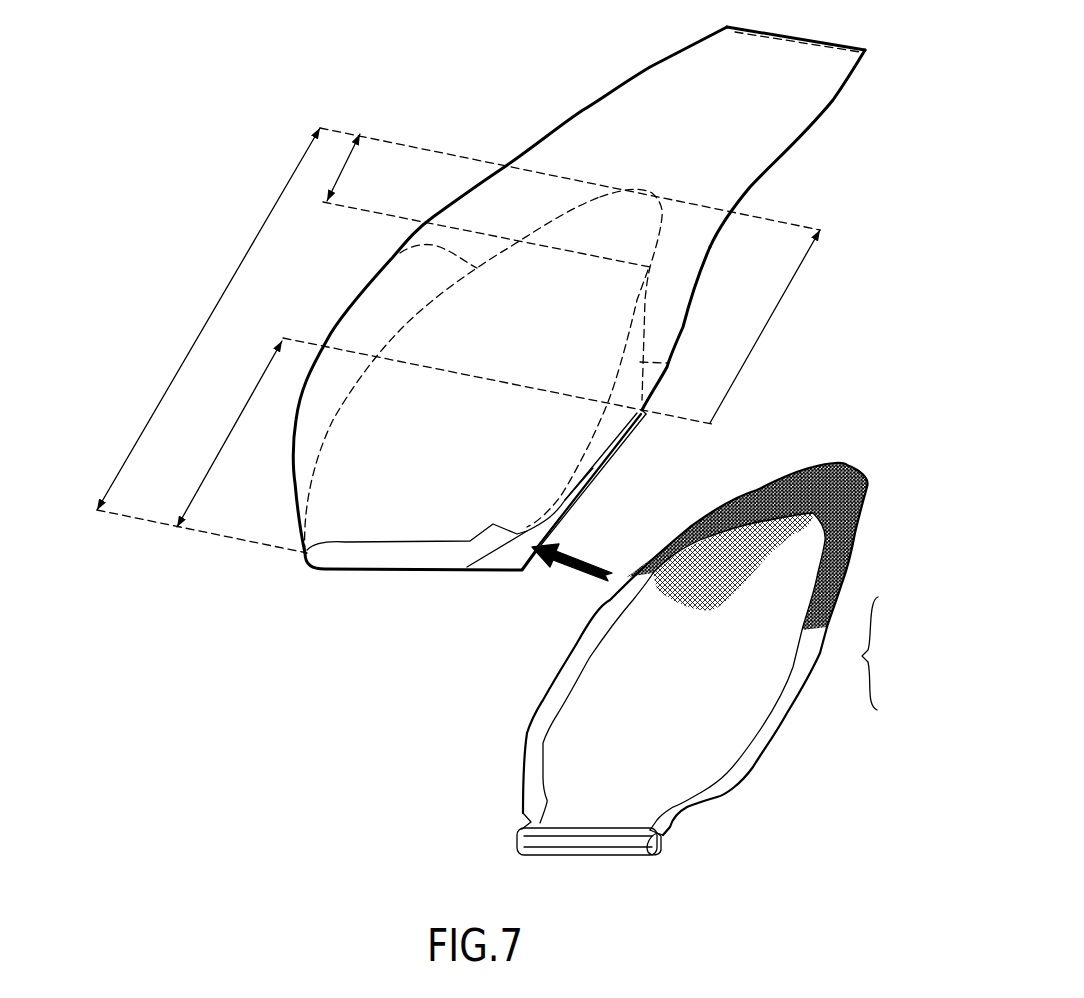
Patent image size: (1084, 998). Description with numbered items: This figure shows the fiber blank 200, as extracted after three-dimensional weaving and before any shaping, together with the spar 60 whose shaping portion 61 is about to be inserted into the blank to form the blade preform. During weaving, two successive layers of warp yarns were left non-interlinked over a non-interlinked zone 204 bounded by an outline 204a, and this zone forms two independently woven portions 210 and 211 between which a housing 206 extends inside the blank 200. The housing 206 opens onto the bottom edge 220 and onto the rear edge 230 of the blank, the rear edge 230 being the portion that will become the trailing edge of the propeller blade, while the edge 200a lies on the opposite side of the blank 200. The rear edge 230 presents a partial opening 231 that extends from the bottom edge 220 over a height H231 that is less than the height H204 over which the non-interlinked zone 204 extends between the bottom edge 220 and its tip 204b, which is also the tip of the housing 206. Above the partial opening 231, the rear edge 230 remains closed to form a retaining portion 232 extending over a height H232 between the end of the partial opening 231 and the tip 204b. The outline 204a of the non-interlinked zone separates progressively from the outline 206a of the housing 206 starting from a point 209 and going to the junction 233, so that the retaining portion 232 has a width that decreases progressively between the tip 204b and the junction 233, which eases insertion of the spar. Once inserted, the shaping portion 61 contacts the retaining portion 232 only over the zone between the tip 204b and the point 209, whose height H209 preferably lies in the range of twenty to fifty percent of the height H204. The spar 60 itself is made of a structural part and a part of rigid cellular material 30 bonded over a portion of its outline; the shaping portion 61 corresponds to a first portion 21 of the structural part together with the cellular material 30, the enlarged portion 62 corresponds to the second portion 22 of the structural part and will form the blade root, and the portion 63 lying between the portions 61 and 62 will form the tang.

The fiber blank 200 is at (579, 290).
The leading edge of preform 200a is at (340, 318).
The non-interlinked zone 204 is at (515, 343).
The outline of the non-interlinked zone 204a is at (400, 253).
The tip of the non-interlinked zone 204b is at (649, 192).
The housing 206 is at (476, 446).
The outline of the housing 206a is at (615, 382).
The point 209 is at (650, 268).
The first independently woven portion 210 is at (562, 444).
The second independently woven portion 211 is at (562, 524).
The bottom edge 220 is at (310, 560).
The rear edge 230 is at (710, 250).
The partial opening 231 is at (594, 473).
The retaining portion 232 is at (679, 343).
The junction 233 is at (645, 421).
The spar 60 is at (708, 648).
The part made of rigid cellular material 30 is at (820, 620).
The first portion of the structural part 21 is at (750, 688).
The shaping portion 61 is at (881, 653).
The second portion of the structural part 22 is at (543, 835).
The enlarged portion 62 is at (652, 853).
The intermediate portion 63 is at (657, 833).
The height of the non-interlinked zone H204 is at (213, 313).
The height of the contact zone H209 is at (340, 166).
The height of the partial opening H231 is at (226, 433).
The height of the retaining portion H232 is at (787, 299).